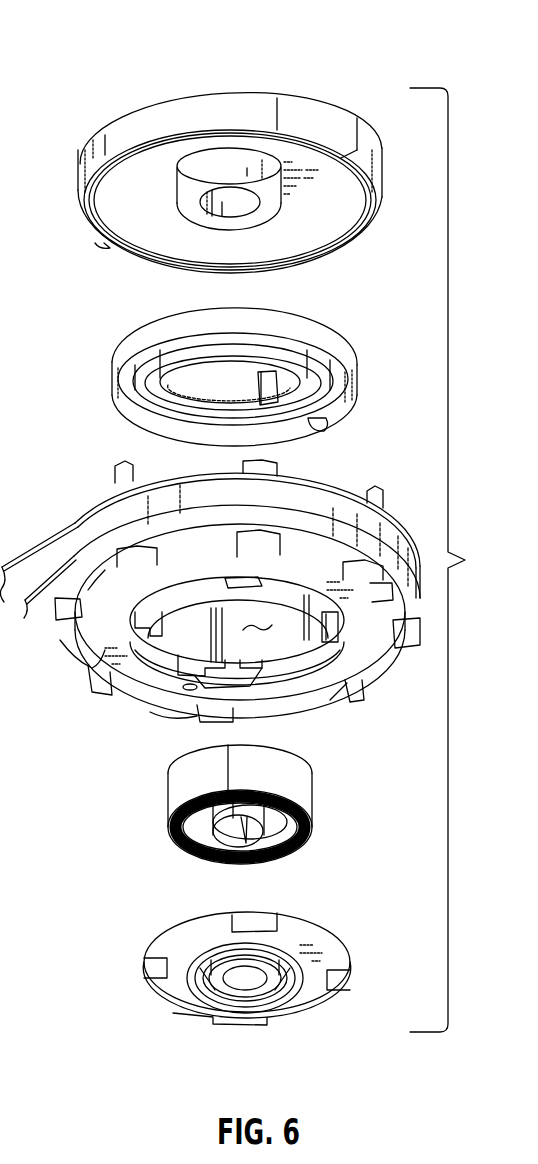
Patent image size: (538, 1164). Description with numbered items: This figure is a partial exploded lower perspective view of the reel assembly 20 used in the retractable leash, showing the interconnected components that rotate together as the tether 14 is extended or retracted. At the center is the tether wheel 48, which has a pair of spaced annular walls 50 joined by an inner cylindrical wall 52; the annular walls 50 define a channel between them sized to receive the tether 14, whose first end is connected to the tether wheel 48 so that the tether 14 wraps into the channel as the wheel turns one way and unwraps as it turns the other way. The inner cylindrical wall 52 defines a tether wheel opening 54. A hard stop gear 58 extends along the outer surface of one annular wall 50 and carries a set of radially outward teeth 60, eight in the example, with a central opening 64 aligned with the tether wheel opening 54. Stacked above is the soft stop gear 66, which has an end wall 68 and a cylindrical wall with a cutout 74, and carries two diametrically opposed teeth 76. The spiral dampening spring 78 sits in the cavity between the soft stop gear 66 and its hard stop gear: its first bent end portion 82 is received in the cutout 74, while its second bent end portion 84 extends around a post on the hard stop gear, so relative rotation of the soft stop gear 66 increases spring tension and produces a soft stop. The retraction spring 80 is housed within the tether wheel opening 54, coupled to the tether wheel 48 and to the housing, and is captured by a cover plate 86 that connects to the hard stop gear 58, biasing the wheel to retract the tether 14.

The tether 14 is at (38, 556).
The reel assembly 20 is at (452, 560).
The tether wheel 48 is at (83, 506).
The annular walls 50 is at (345, 492).
The inner cylindrical wall 52 is at (177, 628).
The tether wheel opening 54 is at (258, 628).
The hard stop gear 58 is at (127, 668).
The teeth 60 is at (373, 502).
The central opening 64 is at (257, 627).
The soft stop gear 66 is at (197, 93).
The end wall 68 is at (132, 160).
The cutout 74 is at (213, 216).
The teeth 76 is at (348, 118).
The dampening spring 78 is at (350, 327).
The retraction spring 80 is at (337, 800).
The first bent end portion 82 is at (260, 380).
The second bent end portion 84 is at (317, 434).
The cover plate 86 is at (305, 1010).